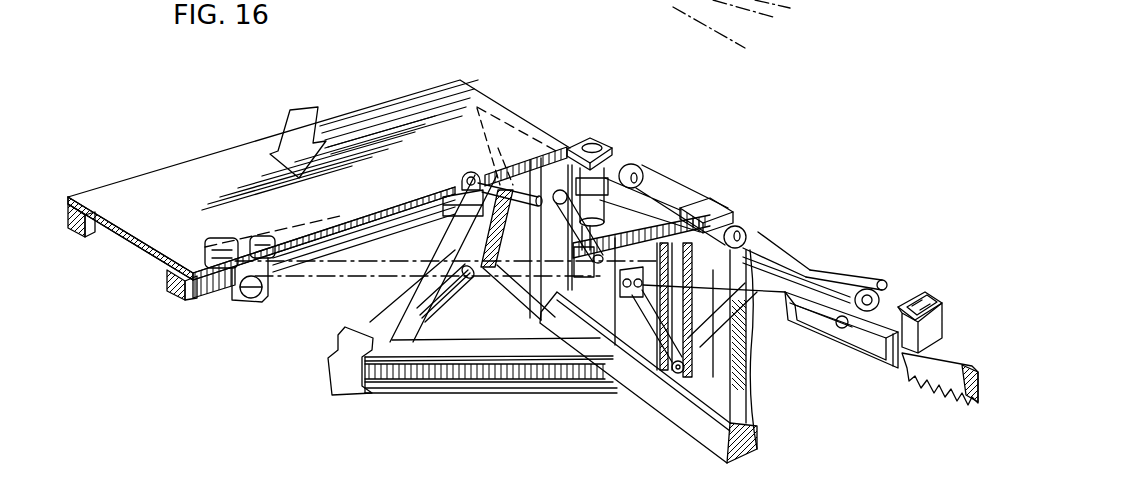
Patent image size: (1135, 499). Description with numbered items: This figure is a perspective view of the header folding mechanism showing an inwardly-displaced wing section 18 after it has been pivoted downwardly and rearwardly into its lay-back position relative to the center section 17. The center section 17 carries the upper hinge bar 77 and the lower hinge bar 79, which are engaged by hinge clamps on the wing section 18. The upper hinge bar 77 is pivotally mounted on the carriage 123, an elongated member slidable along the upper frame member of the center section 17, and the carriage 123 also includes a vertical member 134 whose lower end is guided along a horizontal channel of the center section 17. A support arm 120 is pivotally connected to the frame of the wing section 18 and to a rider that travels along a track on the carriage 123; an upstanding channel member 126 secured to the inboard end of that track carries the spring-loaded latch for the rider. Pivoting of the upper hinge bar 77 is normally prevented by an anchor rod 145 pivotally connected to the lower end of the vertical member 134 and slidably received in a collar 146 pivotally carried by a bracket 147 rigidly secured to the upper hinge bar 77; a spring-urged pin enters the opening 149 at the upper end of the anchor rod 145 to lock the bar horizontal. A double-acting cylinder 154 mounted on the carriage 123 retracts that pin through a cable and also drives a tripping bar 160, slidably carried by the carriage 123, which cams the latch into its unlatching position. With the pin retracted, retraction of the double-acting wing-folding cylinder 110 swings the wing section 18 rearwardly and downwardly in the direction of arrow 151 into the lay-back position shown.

The center section 17 is at (657, 428).
The wing section 18 is at (210, 150).
The upper hinge bar 77 is at (620, 167).
The lower hinge bar 79 is at (435, 310).
The wing-folding cylinder 110 is at (372, 250).
The support arm 120 is at (490, 175).
The carriage 123 is at (660, 193).
The upstanding channel member 126 is at (935, 322).
The vertical member 134 is at (757, 345).
The anchor rod 145 is at (665, 345).
The collar 146 is at (560, 312).
The bracket 147 is at (598, 340).
The opening 149 is at (560, 232).
The arrow 151 is at (290, 115).
The double-acting cylinder 154 is at (840, 330).
The tripping bar 160 is at (875, 367).